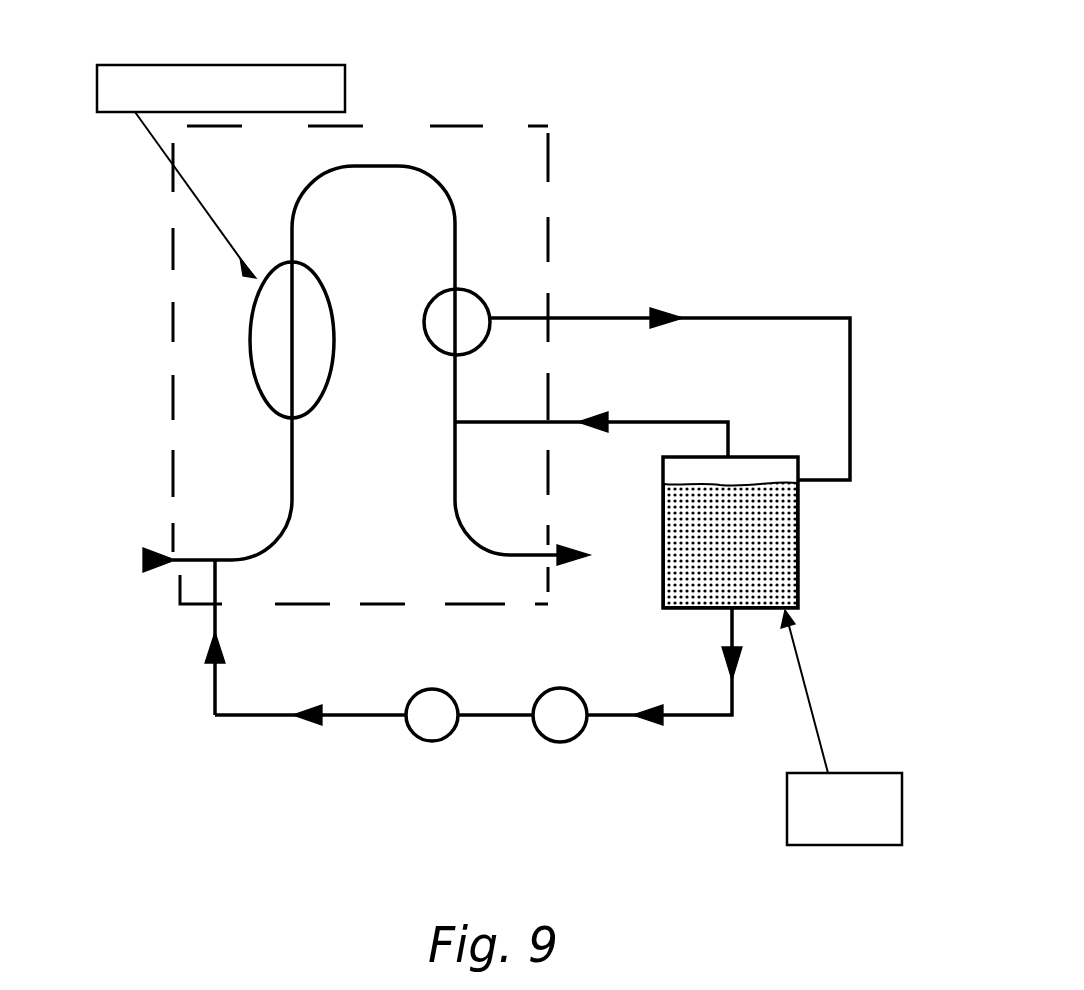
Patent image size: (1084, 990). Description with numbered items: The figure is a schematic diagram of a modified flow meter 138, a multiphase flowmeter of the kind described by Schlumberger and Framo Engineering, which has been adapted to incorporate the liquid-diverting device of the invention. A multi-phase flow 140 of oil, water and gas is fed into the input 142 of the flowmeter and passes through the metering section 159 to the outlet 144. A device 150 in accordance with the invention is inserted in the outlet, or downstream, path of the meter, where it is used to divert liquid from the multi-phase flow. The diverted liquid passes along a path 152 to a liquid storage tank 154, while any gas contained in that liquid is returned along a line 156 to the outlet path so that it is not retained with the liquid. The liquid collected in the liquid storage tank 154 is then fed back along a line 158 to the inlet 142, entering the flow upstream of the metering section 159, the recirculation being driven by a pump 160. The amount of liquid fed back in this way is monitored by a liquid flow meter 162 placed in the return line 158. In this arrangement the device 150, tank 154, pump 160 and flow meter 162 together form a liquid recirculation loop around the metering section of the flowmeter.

The modified flow meter 138 is at (465, 125).
The multi-phase flow 140 is at (140, 562).
The input 142 is at (195, 565).
The outlet 144 is at (543, 560).
The device 150 is at (500, 280).
The path 152 is at (850, 405).
The liquid storage tank 154 is at (800, 568).
The line 156 is at (662, 422).
The line 158 is at (712, 716).
The metering section 159 is at (227, 65).
The pump 160 is at (562, 742).
The liquid flow meter 162 is at (432, 741).